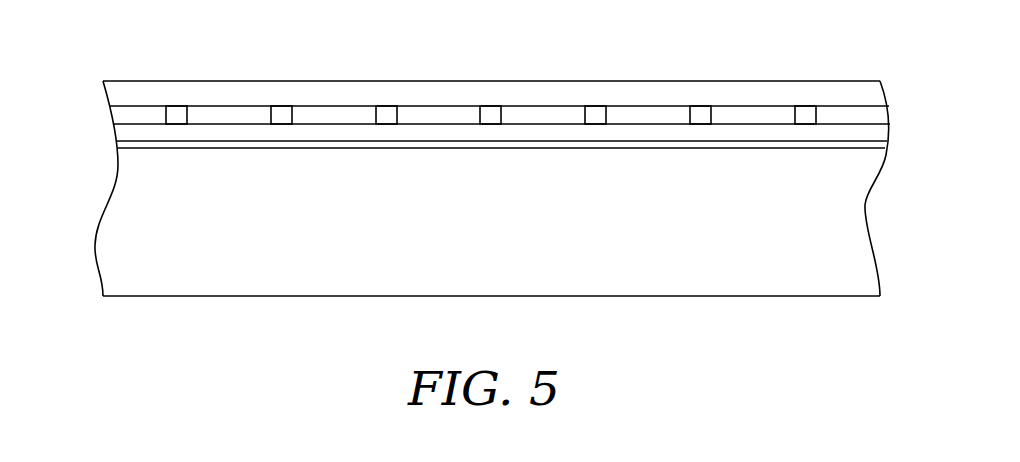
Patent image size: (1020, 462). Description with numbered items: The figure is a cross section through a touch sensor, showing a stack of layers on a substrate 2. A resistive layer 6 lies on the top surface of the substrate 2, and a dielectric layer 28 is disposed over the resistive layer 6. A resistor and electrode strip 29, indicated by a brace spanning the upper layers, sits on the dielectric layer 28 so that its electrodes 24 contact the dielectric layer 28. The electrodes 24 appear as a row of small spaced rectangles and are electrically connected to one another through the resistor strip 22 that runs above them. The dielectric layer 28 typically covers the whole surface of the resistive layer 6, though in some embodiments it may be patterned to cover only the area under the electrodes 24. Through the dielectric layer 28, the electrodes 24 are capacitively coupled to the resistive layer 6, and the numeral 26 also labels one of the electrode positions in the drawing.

The substrate 2 is at (733, 283).
The resistive layer 6 is at (639, 148).
The resistor strip 22 is at (429, 81).
The electrodes 24 is at (528, 113).
The electrodes 26 is at (598, 113).
The dielectric layer 28 is at (666, 125).
The resistor and electrode strip 29 is at (95, 80).